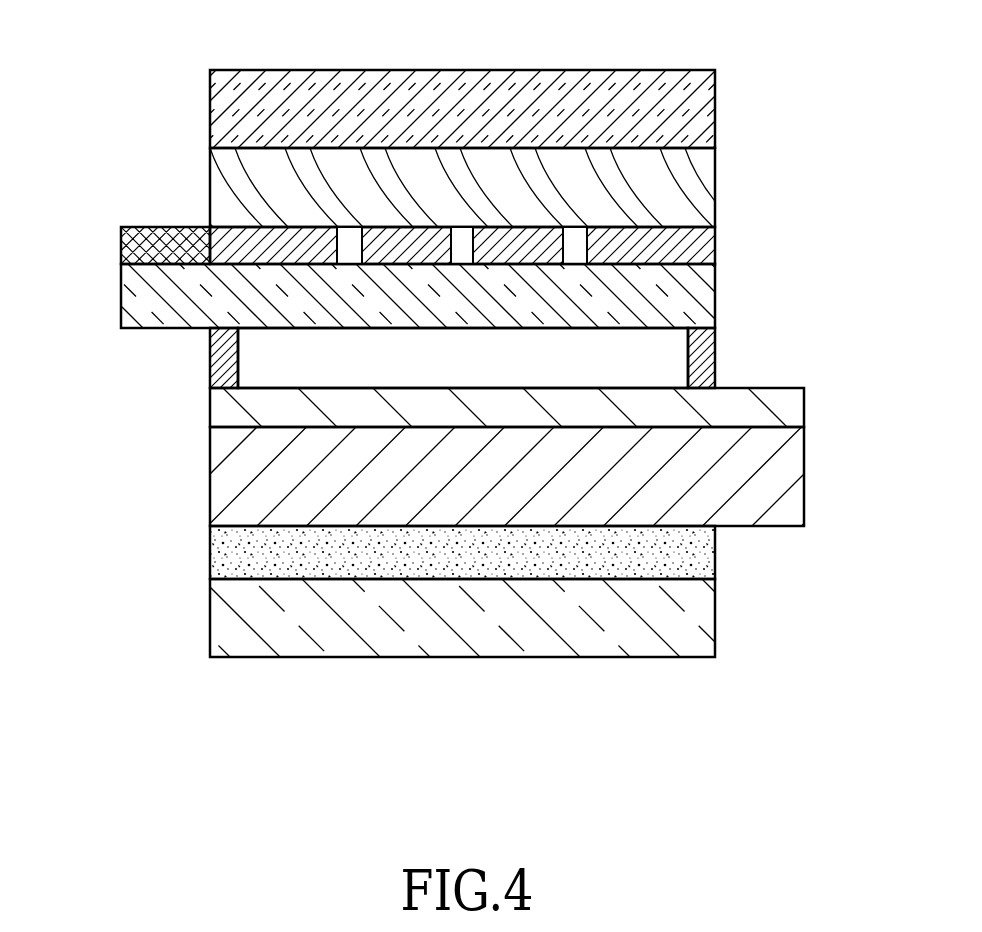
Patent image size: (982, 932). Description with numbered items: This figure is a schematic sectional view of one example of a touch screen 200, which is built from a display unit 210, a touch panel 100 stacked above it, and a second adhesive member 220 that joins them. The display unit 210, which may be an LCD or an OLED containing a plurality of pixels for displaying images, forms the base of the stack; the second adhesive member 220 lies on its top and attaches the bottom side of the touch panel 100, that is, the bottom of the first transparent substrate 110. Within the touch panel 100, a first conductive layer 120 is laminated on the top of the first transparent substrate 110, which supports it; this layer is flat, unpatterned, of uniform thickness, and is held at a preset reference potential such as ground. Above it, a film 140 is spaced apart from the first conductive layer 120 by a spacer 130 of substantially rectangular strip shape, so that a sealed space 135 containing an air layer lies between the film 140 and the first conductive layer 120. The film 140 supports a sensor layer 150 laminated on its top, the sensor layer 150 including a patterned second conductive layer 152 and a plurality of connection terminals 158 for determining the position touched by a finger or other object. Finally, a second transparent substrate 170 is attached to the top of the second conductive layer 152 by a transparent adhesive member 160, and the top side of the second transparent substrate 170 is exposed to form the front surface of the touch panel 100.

The touch panel 100 is at (465, 267).
The first transparent substrate 110 is at (790, 470).
The first conductive layer 120 is at (790, 408).
The spacer 130 is at (706, 345).
The space 135 is at (668, 370).
The film 140 is at (703, 300).
The sensor layer 150 is at (501, 247).
The second conductive layer 152 is at (712, 233).
The connection terminals 158 is at (130, 247).
The adhesive member 160 is at (705, 178).
The second transparent substrate 170 is at (713, 103).
The touch screen 200 is at (478, 623).
The display unit 210 is at (706, 616).
The second adhesive member 220 is at (706, 552).